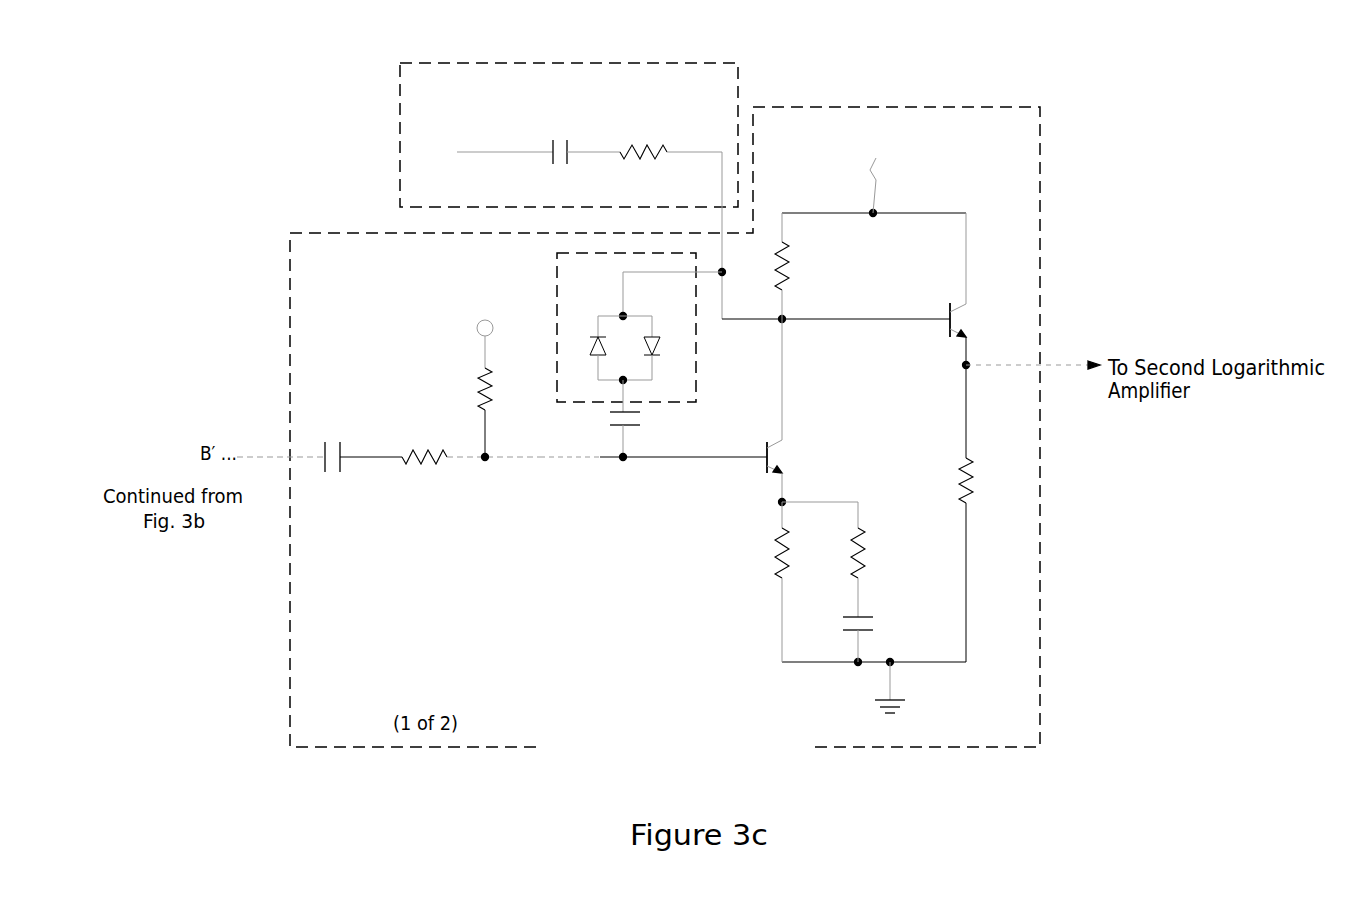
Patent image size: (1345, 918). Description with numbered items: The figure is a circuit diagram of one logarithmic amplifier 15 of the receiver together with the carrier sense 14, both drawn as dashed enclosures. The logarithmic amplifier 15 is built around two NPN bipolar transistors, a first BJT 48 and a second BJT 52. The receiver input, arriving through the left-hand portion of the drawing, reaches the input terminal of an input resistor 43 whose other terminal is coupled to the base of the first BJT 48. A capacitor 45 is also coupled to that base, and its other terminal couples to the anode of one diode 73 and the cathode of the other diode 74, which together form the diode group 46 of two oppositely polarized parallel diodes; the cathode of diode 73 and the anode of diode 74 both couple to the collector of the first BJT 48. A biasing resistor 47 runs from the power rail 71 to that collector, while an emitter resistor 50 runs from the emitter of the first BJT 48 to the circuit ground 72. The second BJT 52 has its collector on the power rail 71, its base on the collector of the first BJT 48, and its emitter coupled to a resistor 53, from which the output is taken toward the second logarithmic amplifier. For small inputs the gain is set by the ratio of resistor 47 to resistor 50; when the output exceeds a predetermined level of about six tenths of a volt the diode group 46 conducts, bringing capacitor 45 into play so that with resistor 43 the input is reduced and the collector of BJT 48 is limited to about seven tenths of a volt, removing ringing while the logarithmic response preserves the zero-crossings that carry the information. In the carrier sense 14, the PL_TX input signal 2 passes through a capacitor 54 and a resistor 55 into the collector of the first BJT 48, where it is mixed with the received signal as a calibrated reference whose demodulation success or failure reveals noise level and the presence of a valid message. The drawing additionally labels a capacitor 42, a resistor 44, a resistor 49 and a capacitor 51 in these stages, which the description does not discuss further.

The carrier sense 14 is at (569, 110).
The logarithmic amplifier 15 is at (665, 401).
The PL_TX input signal 2 is at (505, 167).
The capacitor C30 54 is at (579, 143).
The resistor R52 55 is at (671, 115).
The power rail 71 is at (874, 172).
The resistor R9 47 is at (804, 266).
The diode 73 is at (587, 332).
The diode 74 is at (663, 332).
The diode group D3 46 is at (653, 329).
The capacitor C8 45 is at (615, 420).
The BJT Q9 48 is at (795, 410).
The BJT Q12 52 is at (964, 335).
The resistor R37 53 is at (963, 548).
The resistor R22 50 is at (856, 559).
The capacitor C9 51 is at (876, 614).
The resistor R36 49 is at (759, 582).
The circuit ground 72 is at (908, 690).
The capacitor C25 42 is at (319, 447).
The resistor R48 43 is at (463, 474).
The resistor R29 44 is at (478, 379).